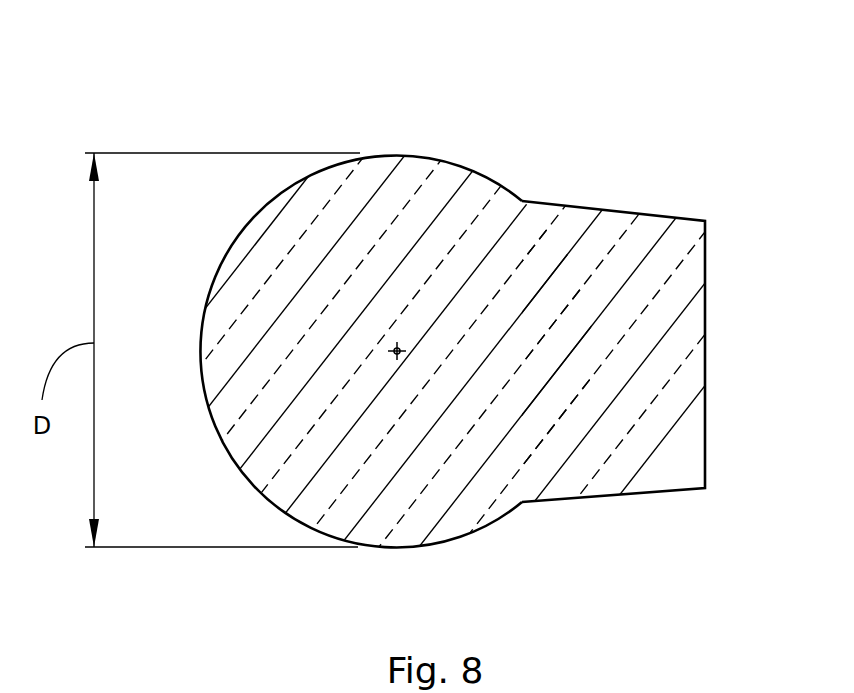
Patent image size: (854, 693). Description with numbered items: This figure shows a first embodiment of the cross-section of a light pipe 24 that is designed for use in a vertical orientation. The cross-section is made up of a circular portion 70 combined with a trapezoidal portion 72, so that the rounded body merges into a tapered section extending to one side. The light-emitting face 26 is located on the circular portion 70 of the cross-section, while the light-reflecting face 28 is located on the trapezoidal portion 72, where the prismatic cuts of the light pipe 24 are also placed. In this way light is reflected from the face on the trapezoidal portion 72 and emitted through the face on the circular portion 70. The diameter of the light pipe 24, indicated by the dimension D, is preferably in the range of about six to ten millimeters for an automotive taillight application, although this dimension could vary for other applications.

The light pipe 24 is at (427, 321).
The light-emitting face 26 is at (408, 351).
The light-reflecting face 28 is at (570, 380).
The circular portion 70 is at (288, 270).
The trapezoidal portion 72 is at (630, 455).